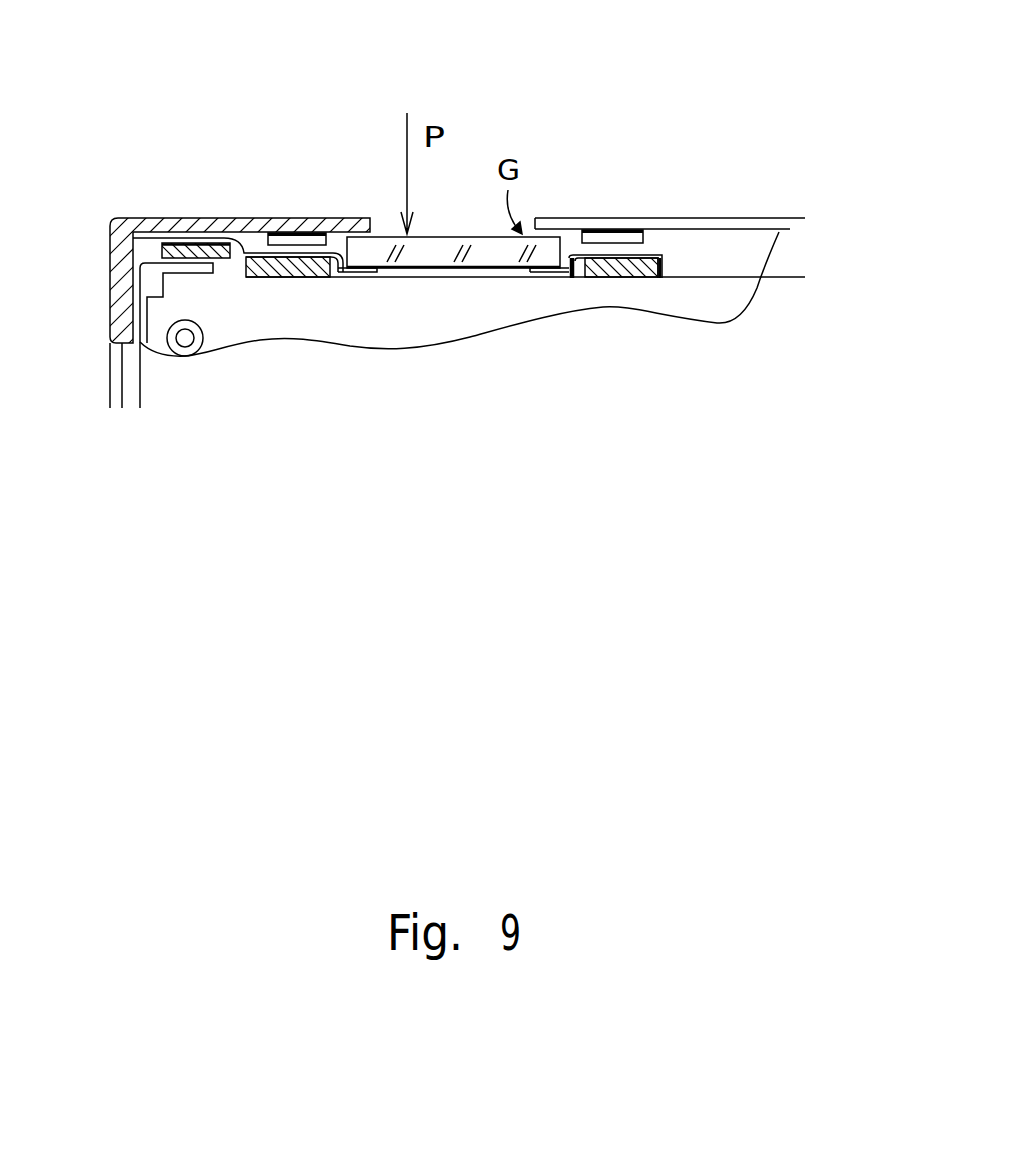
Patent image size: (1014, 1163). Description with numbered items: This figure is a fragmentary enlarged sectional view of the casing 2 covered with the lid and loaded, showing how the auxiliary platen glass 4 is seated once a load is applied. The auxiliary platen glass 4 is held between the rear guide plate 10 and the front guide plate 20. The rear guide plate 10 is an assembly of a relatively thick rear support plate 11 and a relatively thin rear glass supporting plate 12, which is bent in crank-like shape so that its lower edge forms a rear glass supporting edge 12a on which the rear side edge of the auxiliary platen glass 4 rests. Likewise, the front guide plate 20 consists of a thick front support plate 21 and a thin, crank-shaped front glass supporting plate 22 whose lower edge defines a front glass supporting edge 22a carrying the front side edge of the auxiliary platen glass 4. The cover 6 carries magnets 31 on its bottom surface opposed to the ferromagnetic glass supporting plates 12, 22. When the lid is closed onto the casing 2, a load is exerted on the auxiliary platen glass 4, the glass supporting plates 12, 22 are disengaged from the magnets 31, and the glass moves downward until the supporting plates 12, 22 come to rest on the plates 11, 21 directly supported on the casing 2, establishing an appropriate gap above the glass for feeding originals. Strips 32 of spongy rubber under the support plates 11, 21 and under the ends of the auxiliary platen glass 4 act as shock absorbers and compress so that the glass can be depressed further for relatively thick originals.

The casing 2 is at (732, 229).
The auxiliary platen glass 4 is at (467, 245).
The cover 6 is at (133, 220).
The rear guide plate 10 is at (622, 258).
The rear support plate 11 is at (718, 296).
The rear glass supporting plate 12 is at (577, 278).
The rear glass supporting edge 12a is at (528, 275).
The front guide plate 20 is at (193, 243).
The front support plate 21 is at (236, 243).
The front glass supporting plate 22 is at (331, 272).
The front glass supporting edge 22a is at (363, 273).
The magnets 31 is at (300, 238).
The strips of spongy rubber 32 is at (267, 275).